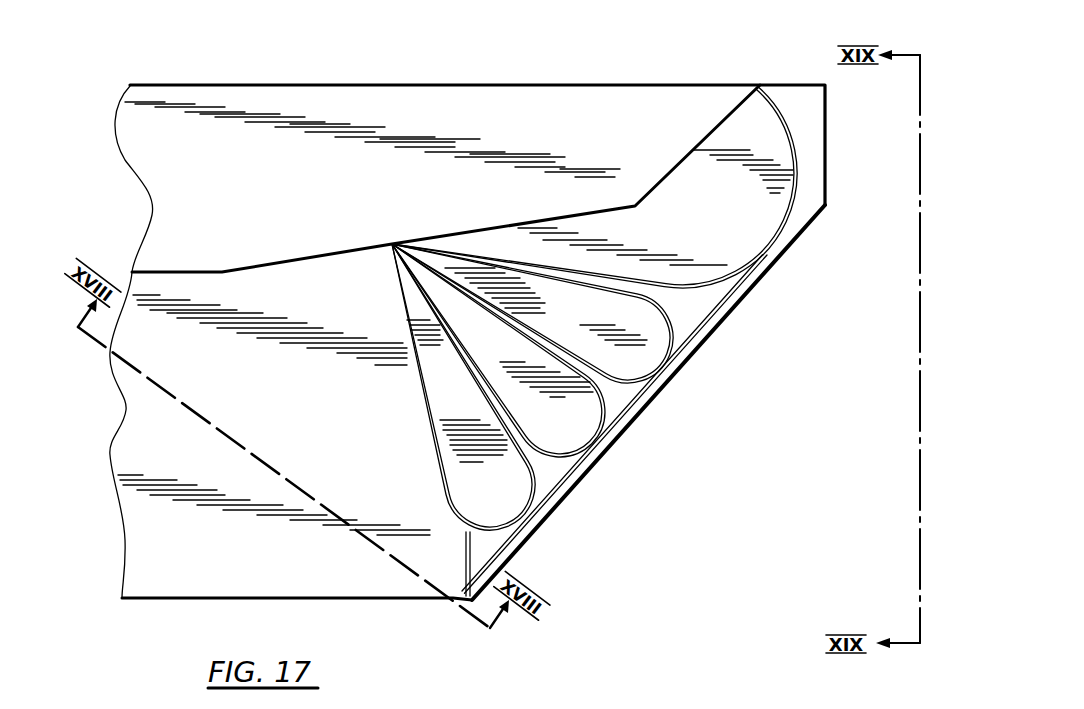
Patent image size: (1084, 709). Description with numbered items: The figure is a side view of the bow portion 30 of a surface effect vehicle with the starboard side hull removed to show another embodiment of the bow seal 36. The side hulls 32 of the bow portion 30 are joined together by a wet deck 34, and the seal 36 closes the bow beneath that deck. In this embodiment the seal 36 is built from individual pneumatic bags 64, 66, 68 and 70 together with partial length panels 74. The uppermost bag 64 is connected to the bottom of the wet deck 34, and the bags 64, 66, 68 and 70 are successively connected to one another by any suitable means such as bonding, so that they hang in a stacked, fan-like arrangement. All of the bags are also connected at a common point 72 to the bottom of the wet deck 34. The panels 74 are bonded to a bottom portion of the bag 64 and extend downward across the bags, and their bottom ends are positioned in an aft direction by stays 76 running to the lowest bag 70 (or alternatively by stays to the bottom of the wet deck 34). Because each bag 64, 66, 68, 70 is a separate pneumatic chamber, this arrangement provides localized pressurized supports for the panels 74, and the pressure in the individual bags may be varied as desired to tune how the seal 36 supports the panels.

The bow portion 30 is at (606, 71).
The side hulls 32 is at (148, 422).
The wet deck 34 is at (163, 210).
The seal 36 is at (692, 401).
The pneumatic bag 64 is at (766, 233).
The pneumatic bag 66 is at (651, 346).
The pneumatic bag 68 is at (580, 433).
The pneumatic bag 70 is at (508, 513).
The common point 72 is at (392, 242).
The panels 74 is at (733, 297).
The stays 76 is at (467, 550).